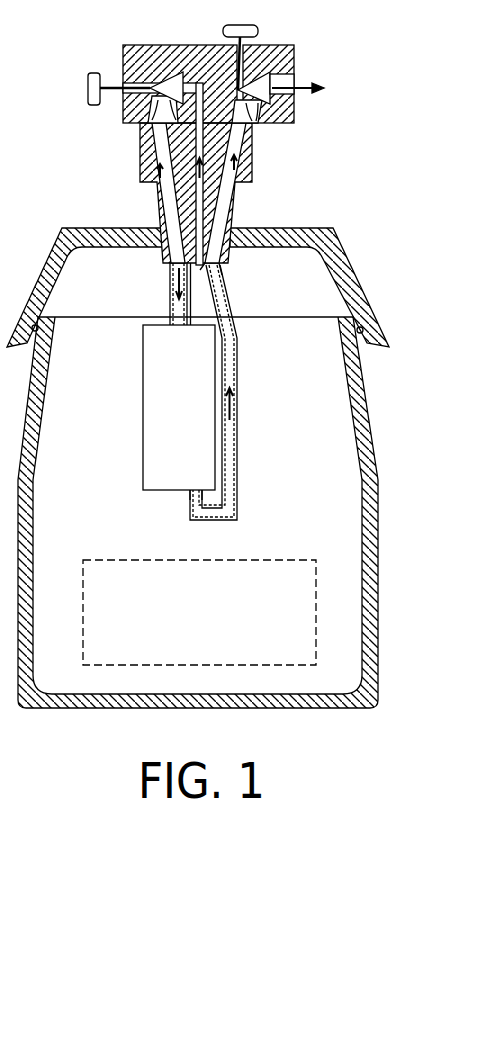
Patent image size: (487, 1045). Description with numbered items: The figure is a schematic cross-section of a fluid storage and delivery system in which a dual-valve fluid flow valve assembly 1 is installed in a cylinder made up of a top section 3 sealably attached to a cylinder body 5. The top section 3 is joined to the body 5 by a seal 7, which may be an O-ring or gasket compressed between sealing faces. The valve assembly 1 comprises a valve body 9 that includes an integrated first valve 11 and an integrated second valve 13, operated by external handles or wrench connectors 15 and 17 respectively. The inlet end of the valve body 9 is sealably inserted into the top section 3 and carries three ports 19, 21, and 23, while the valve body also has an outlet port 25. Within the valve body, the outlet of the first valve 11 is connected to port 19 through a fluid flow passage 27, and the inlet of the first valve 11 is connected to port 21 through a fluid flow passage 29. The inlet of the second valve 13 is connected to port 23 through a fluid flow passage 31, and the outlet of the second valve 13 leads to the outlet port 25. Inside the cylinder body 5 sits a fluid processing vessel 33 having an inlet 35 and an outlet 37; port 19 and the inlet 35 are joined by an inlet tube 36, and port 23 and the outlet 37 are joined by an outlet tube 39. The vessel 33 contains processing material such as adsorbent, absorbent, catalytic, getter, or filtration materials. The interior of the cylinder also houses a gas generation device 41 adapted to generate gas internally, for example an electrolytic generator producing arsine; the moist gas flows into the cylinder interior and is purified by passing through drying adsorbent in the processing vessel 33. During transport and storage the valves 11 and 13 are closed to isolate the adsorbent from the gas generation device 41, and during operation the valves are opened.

The dual-valve fluid flow valve assembly 1 is at (100, 44).
The top section 3 is at (357, 290).
The cylinder body 5 is at (380, 540).
The seal 7 is at (362, 330).
The valve body 9 is at (145, 155).
The first valve 11 is at (140, 125).
The second valve 13 is at (258, 127).
The external handle or wrench connector 15 is at (88, 92).
The external handle or wrench connector 17 is at (258, 30).
The port 19 is at (172, 268).
The port 21 is at (228, 292).
The port 23 is at (216, 262).
The outlet port 25 is at (292, 72).
The fluid flow passage 27 is at (165, 205).
The fluid flow passage 29 is at (208, 178).
The fluid flow passage 31 is at (228, 205).
The fluid processing vessel 33 is at (143, 416).
The inlet 35 is at (170, 318).
The inlet tube 36 is at (176, 293).
The outlet 37 is at (190, 503).
The outlet tube 39 is at (240, 402).
The gas generation device 41 is at (208, 622).